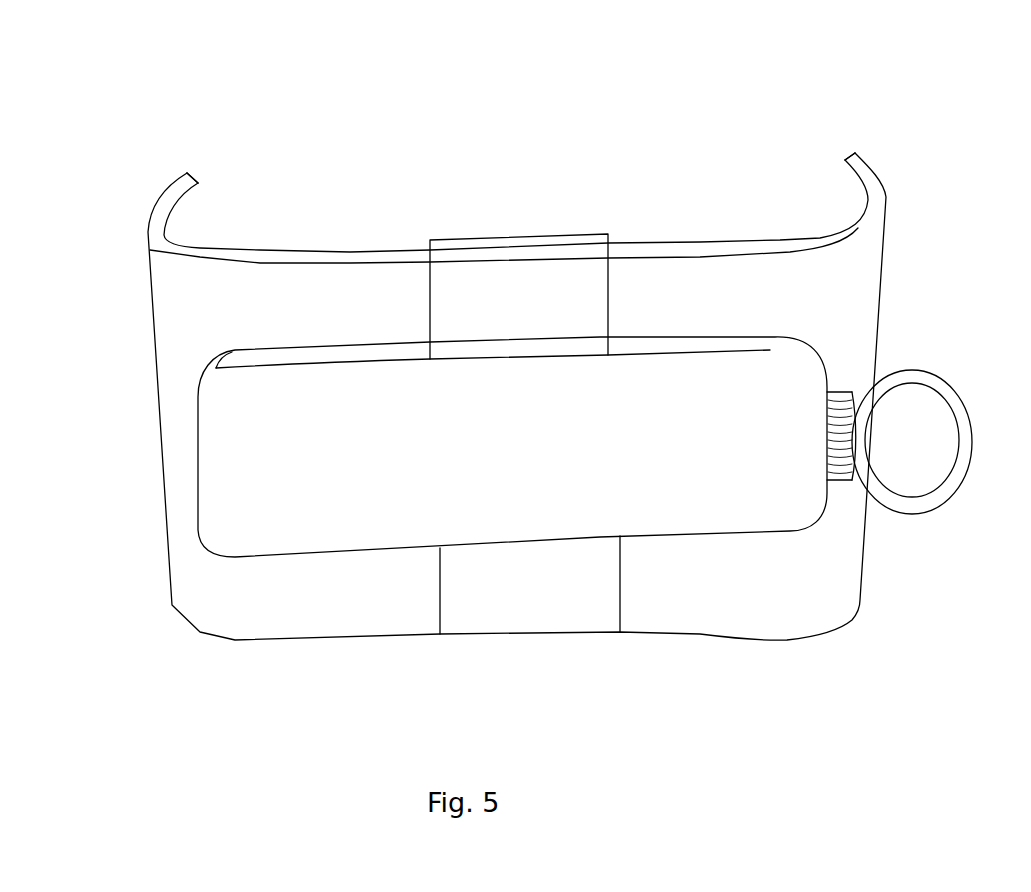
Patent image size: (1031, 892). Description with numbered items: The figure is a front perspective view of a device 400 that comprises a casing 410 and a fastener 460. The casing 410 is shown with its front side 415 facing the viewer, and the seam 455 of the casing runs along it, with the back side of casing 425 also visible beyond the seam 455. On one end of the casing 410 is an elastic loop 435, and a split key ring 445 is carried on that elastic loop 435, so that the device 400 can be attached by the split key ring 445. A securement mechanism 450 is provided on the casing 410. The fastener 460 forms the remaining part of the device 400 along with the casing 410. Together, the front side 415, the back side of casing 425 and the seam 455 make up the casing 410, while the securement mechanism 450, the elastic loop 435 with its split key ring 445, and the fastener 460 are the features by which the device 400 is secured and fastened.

The device 400 is at (657, 145).
The casing 410 is at (350, 537).
The front side of casing 415 is at (672, 443).
The back side of casing 425 is at (712, 333).
The elastic loop 435 is at (828, 480).
The split key ring 445 is at (948, 378).
The securement mechanism 450 is at (463, 237).
The seam 455 is at (257, 375).
The fastener 460 is at (882, 172).